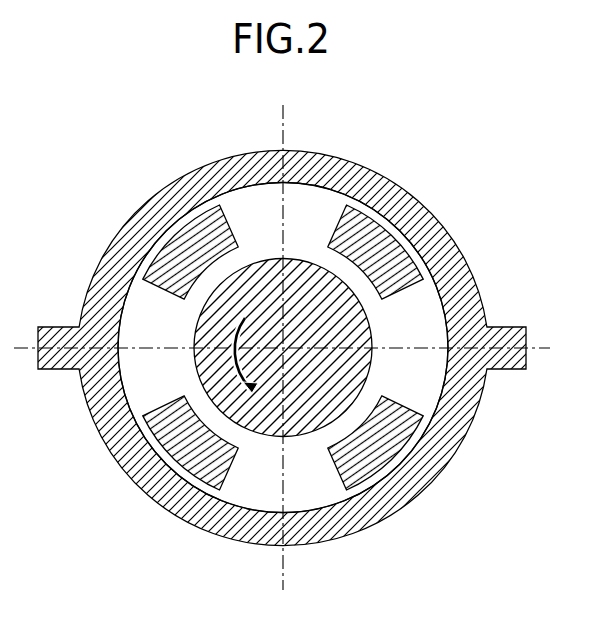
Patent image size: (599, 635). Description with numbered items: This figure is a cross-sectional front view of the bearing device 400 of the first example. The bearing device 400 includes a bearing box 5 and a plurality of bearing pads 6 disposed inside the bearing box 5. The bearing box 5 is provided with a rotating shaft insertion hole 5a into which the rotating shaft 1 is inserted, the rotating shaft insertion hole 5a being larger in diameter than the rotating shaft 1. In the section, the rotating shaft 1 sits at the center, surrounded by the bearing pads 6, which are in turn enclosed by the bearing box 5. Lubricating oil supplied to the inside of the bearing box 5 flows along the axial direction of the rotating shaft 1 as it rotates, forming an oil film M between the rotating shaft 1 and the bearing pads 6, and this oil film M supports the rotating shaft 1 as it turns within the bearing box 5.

The bearing device 400 is at (377, 129).
The bearing box 5 is at (457, 248).
The rotating shaft insertion hole 5a is at (240, 183).
The bearing pad 6 is at (182, 248).
The rotating shaft 1 is at (267, 418).
The oil film M is at (360, 413).